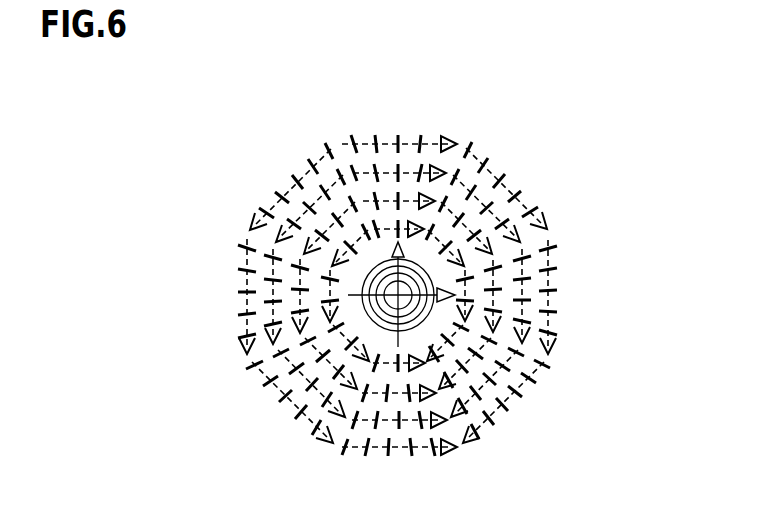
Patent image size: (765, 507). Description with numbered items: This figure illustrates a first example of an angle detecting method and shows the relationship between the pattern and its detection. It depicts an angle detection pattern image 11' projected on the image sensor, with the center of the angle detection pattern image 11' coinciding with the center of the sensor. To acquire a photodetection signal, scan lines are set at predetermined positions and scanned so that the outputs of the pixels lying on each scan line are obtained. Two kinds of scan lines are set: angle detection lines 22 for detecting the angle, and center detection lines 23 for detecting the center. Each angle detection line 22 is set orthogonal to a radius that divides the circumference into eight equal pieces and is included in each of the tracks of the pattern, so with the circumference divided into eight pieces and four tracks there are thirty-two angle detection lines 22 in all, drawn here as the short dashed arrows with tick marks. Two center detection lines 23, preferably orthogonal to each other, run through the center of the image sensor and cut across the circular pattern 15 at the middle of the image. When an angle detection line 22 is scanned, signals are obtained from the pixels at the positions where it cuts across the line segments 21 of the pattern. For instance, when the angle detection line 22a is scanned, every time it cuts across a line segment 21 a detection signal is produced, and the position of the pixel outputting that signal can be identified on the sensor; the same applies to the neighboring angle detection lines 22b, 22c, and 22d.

The circular pattern 15 is at (363, 323).
The line segment 21 is at (237, 270).
The angle detection line 22 is at (288, 187).
The angle detection line 22a is at (432, 140).
The angle detection line 22b is at (408, 172).
The angle detection line 22c is at (388, 175).
The angle detection line 22d is at (408, 227).
The center detection line 23 is at (433, 330).
The angle detection pattern image 11' is at (538, 204).